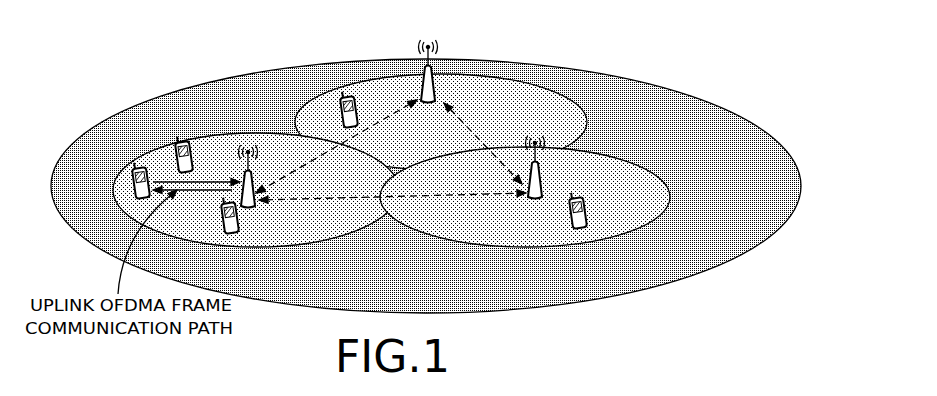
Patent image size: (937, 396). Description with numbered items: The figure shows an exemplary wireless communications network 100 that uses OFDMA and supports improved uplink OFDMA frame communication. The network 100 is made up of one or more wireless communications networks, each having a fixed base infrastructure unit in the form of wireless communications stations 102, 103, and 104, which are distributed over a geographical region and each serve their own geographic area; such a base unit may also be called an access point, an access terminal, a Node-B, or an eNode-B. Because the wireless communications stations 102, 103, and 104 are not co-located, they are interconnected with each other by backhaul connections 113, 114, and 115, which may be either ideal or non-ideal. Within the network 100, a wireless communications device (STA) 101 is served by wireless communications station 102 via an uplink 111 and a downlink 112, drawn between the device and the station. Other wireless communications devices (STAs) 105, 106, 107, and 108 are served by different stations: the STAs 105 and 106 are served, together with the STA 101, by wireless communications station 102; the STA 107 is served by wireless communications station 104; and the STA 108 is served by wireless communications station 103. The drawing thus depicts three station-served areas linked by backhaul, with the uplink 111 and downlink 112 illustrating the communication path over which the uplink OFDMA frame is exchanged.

The wireless communications network 100 is at (704, 42).
The wireless communications device (STA) 101 is at (140, 166).
The wireless communications station 102 is at (248, 150).
The wireless communications station 103 is at (428, 45).
The wireless communications station 104 is at (535, 141).
The wireless communications device (STA) 105 is at (240, 222).
The wireless communications device (STA) 106 is at (183, 140).
The wireless communications device (STA) 107 is at (592, 197).
The wireless communications device (STA) 108 is at (367, 102).
The uplink 111 is at (218, 181).
The downlink 112 is at (186, 192).
The backhaul connection 113 is at (303, 171).
The backhaul connection 114 is at (318, 200).
The backhaul connection 115 is at (468, 131).